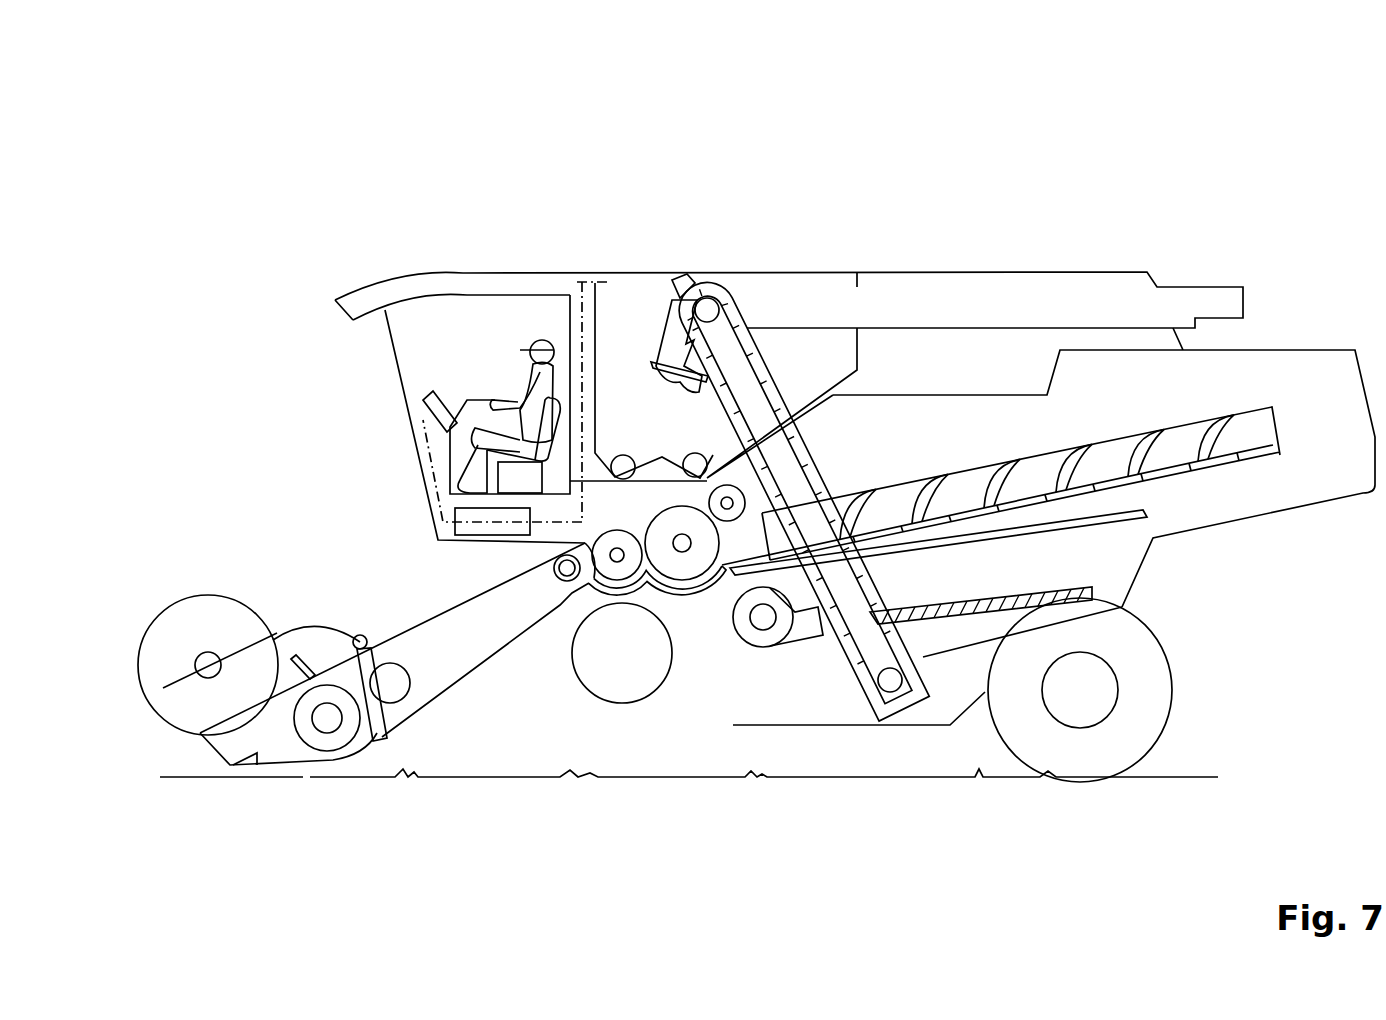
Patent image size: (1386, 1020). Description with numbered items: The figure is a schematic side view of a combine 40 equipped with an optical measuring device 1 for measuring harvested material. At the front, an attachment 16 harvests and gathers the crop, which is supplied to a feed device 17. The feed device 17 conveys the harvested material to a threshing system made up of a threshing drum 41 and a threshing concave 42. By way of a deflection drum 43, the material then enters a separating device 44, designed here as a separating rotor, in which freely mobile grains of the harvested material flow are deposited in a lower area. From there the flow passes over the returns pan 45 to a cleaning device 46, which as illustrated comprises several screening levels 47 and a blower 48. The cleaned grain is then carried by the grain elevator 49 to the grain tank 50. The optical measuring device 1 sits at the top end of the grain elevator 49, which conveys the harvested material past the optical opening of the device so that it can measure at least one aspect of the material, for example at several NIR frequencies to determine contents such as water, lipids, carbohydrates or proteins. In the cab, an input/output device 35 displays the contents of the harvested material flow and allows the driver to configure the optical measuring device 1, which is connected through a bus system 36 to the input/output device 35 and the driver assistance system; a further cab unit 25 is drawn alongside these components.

The combine 40 is at (1094, 155).
The attachment 16 is at (163, 580).
The feed device 17 is at (443, 678).
The control unit 25 is at (480, 522).
The input/output device 35 is at (420, 401).
The bus system 36 is at (590, 280).
The grain tank 50 is at (633, 310).
The optical measuring device 1 is at (685, 277).
The grain elevator 49 is at (755, 340).
The threshing drum 41 is at (662, 525).
The deflection drum 43 is at (743, 493).
The concave 42 is at (693, 595).
The blower 48 is at (752, 632).
The separating device 44 is at (1225, 470).
The returns pan 45 is at (1093, 528).
The screening levels 47 is at (1125, 600).
The cleaning device 46 is at (957, 642).